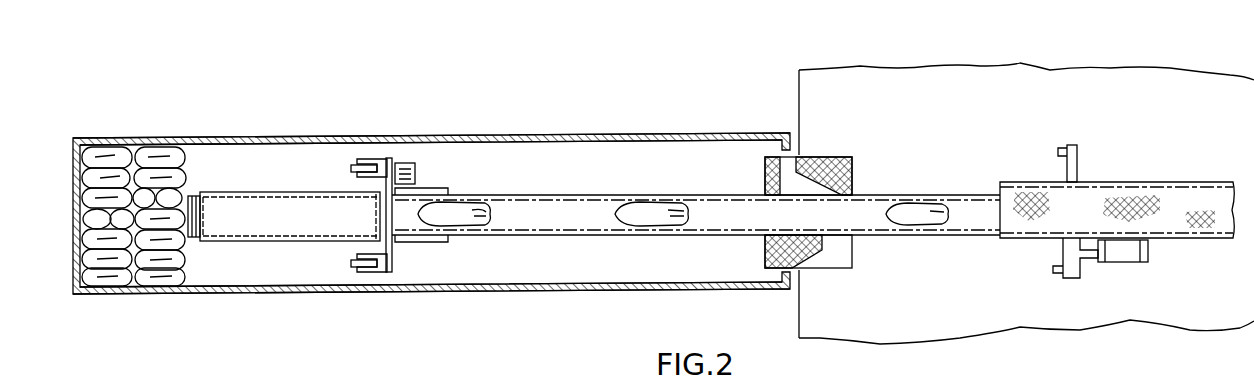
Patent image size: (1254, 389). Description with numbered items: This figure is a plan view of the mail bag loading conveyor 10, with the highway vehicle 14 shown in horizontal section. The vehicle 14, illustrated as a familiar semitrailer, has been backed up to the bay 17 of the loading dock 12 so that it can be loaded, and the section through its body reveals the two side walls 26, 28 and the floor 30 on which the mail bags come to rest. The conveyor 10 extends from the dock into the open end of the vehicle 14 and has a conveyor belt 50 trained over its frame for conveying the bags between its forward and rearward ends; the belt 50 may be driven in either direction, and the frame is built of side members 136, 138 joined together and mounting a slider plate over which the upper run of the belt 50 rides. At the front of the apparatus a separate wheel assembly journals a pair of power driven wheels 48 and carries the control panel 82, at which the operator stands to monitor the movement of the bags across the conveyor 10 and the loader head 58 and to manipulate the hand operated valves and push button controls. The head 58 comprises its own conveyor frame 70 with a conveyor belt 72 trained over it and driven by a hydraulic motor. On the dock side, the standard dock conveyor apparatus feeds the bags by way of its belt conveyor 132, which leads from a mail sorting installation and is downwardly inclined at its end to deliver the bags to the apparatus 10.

The conveyor 10 is at (944, 161).
The loading dock 12 is at (943, 82).
The highway vehicle 14 is at (681, 130).
The bay 17 is at (833, 120).
The side wall 26 is at (481, 289).
The side wall 28 is at (501, 134).
The floor 30 is at (598, 286).
The power driven wheels 48 is at (362, 159).
The conveyor belt 50 is at (577, 206).
The head 58 is at (269, 252).
The conveyor frame 70 is at (232, 189).
The conveyor belt 72 is at (284, 204).
The control panel 82 is at (419, 163).
The belt conveyor 132 is at (1166, 195).
The side member 136 is at (683, 236).
The side member 138 is at (712, 193).